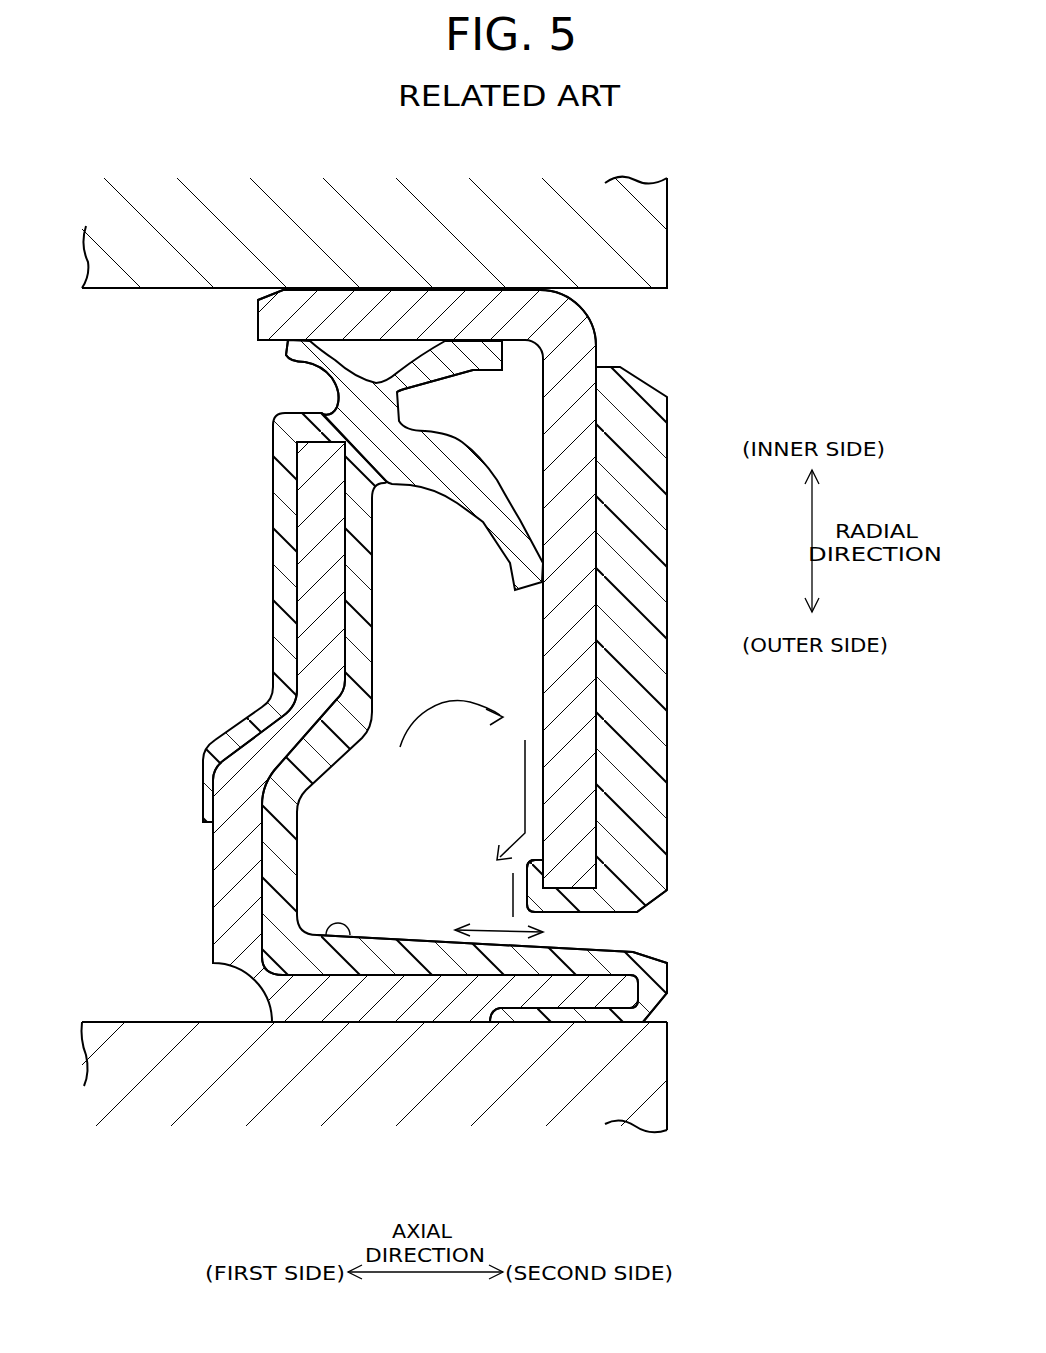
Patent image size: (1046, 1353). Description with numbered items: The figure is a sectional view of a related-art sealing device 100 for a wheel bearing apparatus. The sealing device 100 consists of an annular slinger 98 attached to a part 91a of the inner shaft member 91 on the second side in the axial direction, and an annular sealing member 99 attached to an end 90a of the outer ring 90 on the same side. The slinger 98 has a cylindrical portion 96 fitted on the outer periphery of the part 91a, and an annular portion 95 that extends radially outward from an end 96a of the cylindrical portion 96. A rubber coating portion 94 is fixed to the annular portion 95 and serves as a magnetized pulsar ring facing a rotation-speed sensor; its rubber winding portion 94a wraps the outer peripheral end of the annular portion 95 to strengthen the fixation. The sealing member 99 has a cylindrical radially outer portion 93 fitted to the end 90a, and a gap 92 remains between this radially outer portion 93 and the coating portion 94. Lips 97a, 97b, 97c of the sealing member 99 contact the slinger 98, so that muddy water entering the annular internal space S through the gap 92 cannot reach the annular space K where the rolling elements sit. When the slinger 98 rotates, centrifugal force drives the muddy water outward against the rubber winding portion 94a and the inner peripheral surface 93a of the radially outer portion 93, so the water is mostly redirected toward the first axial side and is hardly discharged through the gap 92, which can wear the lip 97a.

The annular space (bearing inner part) K is at (445, 634).
The outer ring 90 is at (682, 1056).
The end of outer ring 90a is at (462, 1090).
The inner shaft member 91 is at (682, 239).
The part of inner shaft member 91a is at (343, 237).
The gap 92 is at (682, 926).
The radially outer portion 93 is at (388, 1013).
The inner peripheral surface 93a is at (317, 935).
The coating portion 94 is at (650, 860).
The rubber winding portion 94a is at (537, 888).
The annular portion 95 is at (557, 632).
The cylindrical portion 96 is at (393, 310).
The end of cylindrical portion 96a is at (562, 326).
The lip 97a is at (517, 565).
The lip 97b is at (473, 363).
The lip 97c is at (290, 348).
The slinger 98 is at (682, 628).
The sealing member 99 is at (198, 749).
The sealing device 100 is at (266, 540).
The internal space S is at (448, 790).